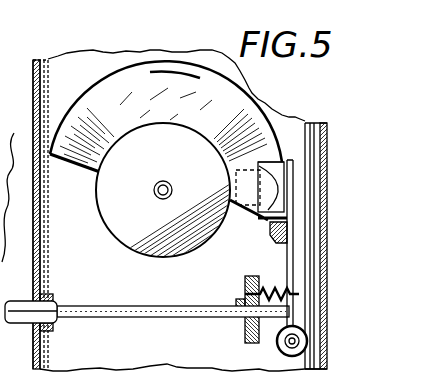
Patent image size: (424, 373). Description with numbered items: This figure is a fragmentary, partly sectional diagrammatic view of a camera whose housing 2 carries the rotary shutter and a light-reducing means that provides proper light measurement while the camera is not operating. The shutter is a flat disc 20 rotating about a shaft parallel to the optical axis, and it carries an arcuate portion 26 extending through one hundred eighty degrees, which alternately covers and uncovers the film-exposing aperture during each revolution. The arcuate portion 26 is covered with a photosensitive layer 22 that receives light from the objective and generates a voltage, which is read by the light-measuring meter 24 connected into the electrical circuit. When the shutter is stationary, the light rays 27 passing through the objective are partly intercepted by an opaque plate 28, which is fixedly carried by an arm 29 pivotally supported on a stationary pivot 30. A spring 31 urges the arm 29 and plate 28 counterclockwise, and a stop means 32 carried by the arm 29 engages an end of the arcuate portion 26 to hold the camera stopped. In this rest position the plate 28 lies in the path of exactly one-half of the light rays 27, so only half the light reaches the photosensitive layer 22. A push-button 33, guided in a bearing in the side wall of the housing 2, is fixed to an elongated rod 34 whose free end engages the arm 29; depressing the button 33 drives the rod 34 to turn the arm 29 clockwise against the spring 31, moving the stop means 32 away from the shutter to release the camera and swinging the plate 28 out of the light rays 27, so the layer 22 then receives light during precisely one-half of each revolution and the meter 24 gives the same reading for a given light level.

The housing 2 is at (327, 133).
The disc 20 is at (113, 233).
The photosensitive layer 22 is at (128, 78).
The light-measuring meter 24 is at (14, 187).
The arcuate portion 26 is at (175, 72).
The light rays 27 is at (276, 161).
The opaque plate 28 is at (283, 205).
The arm 29 is at (294, 264).
The stationary pivot 30 is at (302, 339).
The spring 31 is at (265, 289).
The stop means 32 is at (284, 235).
The push-button 33 is at (15, 304).
The elongated rod 34 is at (142, 311).